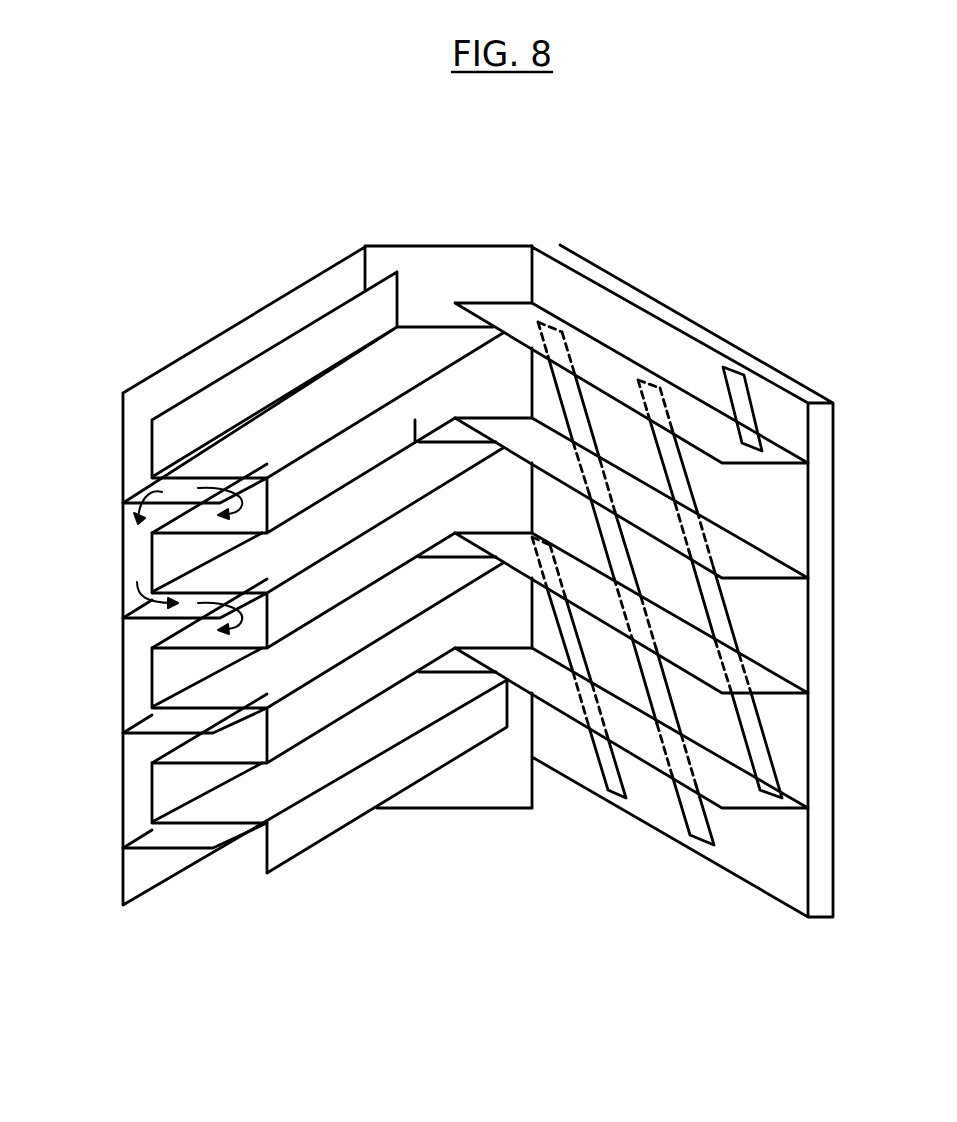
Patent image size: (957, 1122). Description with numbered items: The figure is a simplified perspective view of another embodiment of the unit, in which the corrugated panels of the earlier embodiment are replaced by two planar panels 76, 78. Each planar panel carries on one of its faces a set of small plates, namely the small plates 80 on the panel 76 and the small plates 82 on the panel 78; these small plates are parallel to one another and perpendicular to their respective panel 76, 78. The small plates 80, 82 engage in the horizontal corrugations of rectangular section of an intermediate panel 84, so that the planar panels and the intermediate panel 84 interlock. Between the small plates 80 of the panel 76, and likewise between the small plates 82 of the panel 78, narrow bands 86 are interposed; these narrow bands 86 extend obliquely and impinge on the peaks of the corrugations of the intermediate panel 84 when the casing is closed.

The planar panel 76 is at (802, 503).
The planar panel 78 is at (123, 447).
The small plates 80 is at (692, 413).
The small plates 82 is at (125, 520).
The intermediate panel 84 is at (292, 428).
The narrow bands 86 is at (752, 740).